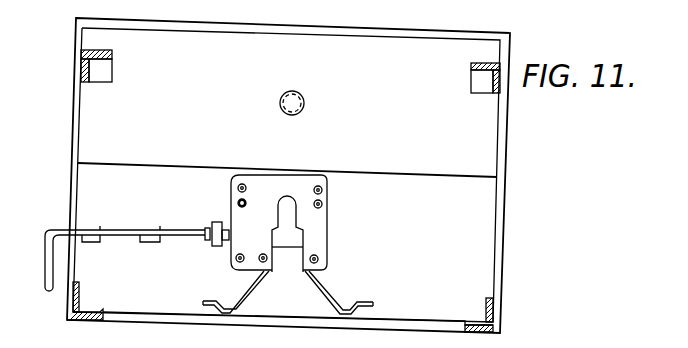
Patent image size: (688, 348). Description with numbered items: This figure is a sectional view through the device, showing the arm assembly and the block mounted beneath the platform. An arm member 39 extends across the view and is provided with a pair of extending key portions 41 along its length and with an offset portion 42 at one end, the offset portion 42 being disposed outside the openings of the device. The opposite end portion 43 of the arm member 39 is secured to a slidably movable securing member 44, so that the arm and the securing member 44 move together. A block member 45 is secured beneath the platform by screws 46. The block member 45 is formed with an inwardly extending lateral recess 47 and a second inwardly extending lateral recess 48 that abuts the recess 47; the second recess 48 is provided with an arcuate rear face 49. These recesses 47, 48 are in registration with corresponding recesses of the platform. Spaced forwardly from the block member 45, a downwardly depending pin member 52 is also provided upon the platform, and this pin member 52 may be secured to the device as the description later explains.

The arm member 39 is at (118, 229).
The key portions 41 is at (90, 244).
The offset portion 42 is at (48, 247).
The end portion 43 is at (212, 224).
The securing member 44 is at (288, 246).
The block member 45 is at (328, 216).
The screws 46 is at (238, 189).
The lateral recess 47 is at (262, 275).
The second lateral recess 48 is at (291, 213).
The arcuate rear face 49 is at (290, 200).
The pin member 52 is at (304, 98).